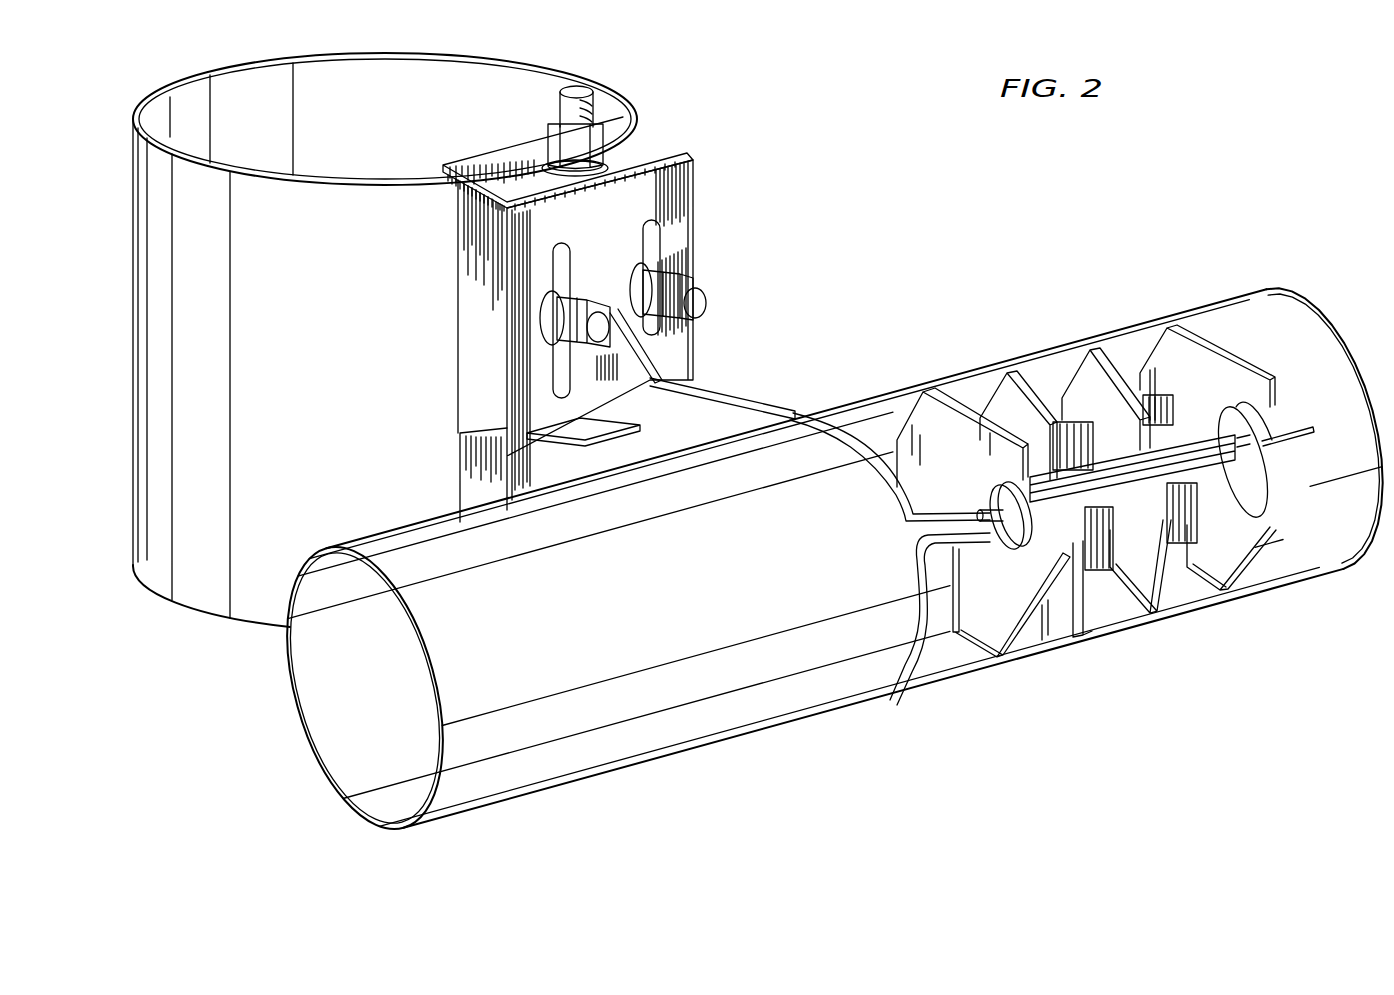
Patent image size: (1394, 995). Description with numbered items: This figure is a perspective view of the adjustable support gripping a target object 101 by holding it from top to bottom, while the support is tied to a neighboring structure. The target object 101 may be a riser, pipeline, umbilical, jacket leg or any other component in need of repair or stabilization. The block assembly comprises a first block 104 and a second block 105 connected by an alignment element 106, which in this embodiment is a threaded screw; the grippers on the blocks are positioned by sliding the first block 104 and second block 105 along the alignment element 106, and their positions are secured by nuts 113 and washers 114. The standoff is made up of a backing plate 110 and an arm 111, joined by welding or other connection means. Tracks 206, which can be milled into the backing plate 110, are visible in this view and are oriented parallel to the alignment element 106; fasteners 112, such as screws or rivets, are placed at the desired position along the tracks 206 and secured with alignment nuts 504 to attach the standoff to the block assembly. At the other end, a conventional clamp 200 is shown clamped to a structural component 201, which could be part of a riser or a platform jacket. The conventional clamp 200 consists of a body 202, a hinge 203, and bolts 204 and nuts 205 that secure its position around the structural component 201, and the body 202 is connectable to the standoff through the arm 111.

The target object 101 is at (195, 90).
The first block 104 is at (473, 292).
The second block 105 is at (470, 467).
The alignment element 106 is at (585, 112).
The backing plate 110 is at (683, 220).
The arm 111 is at (737, 410).
The fasteners 112 is at (593, 353).
The nuts 113 is at (565, 178).
The washers 114 is at (620, 175).
The tracks 206 is at (643, 233).
The alignment nuts 504 is at (567, 337).
The conventional clamp 200 is at (1060, 482).
The structural component 201 is at (733, 713).
The body 202 is at (1037, 357).
The hinge 203 is at (1215, 455).
The bolts 204 is at (1115, 575).
The nuts 205 is at (1150, 610).